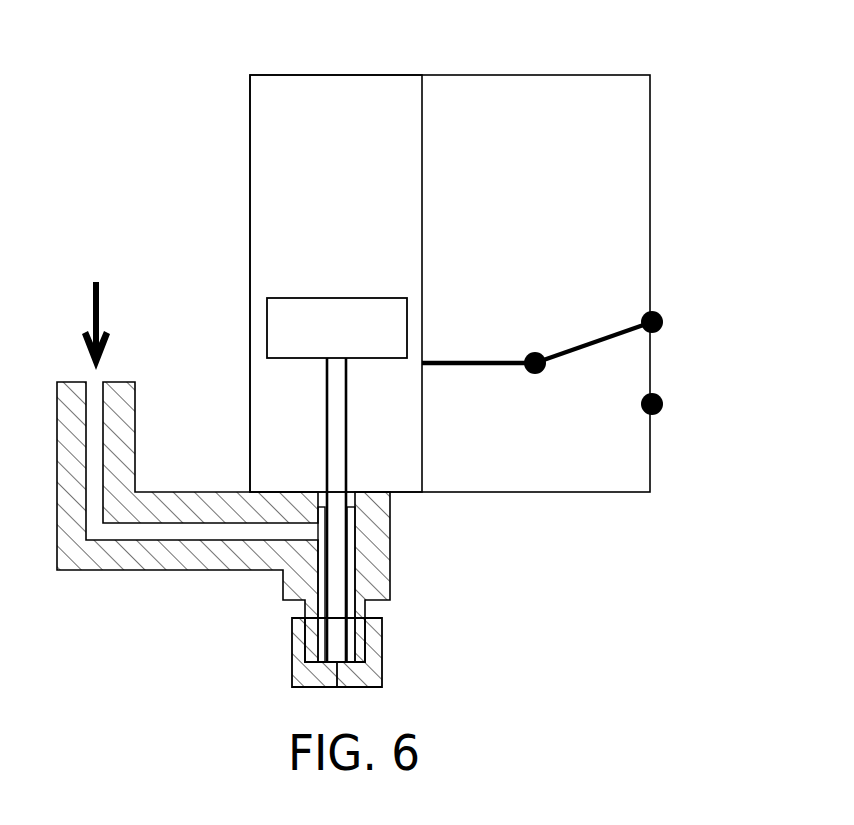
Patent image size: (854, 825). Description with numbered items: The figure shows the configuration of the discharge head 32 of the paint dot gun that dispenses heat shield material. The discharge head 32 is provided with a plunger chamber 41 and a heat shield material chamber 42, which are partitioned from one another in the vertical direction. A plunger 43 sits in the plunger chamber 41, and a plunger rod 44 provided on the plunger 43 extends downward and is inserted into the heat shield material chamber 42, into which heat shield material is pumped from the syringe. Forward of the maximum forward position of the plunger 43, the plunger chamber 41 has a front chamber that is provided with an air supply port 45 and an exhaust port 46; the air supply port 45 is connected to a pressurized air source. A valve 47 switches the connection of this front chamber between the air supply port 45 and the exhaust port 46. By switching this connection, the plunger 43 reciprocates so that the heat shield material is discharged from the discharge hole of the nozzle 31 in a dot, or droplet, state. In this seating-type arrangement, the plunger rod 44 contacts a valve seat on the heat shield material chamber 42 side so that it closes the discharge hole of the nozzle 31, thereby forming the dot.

The nozzle 31 is at (382, 672).
The discharge head 32 is at (650, 111).
The plunger chamber 41 is at (334, 95).
The heat shield material chamber 42 is at (360, 575).
The plunger 43 is at (305, 315).
The plunger rod 44 is at (327, 402).
The air supply port 45 is at (663, 404).
The exhaust port 46 is at (663, 322).
The valve 47 is at (590, 338).